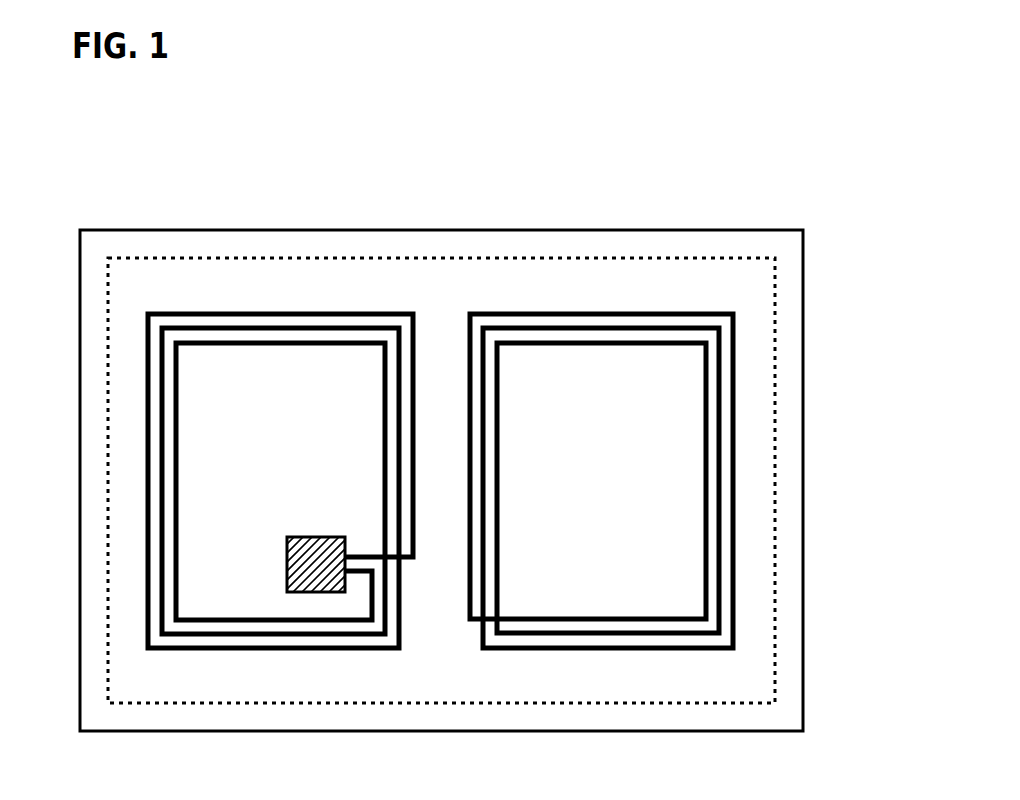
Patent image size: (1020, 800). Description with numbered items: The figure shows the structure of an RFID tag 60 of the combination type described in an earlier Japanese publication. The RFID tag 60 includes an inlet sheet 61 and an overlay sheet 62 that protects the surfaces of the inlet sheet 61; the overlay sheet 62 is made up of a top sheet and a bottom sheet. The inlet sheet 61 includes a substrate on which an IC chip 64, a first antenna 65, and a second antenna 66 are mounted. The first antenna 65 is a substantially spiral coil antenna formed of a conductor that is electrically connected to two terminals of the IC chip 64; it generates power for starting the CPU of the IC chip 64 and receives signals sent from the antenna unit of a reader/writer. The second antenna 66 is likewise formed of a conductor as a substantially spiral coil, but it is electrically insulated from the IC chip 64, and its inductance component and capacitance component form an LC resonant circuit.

The RFID tag 60 is at (717, 196).
The inlet sheet 61 is at (163, 257).
The overlay sheet 62 is at (250, 230).
The IC chip 64 is at (327, 536).
The first antenna 65 is at (148, 449).
The second antenna 66 is at (736, 439).